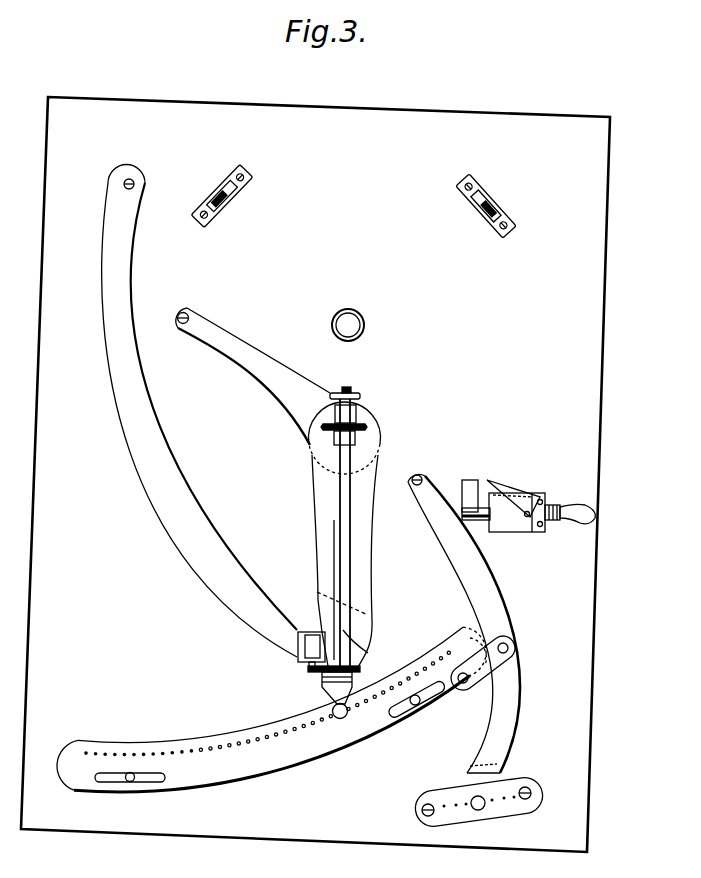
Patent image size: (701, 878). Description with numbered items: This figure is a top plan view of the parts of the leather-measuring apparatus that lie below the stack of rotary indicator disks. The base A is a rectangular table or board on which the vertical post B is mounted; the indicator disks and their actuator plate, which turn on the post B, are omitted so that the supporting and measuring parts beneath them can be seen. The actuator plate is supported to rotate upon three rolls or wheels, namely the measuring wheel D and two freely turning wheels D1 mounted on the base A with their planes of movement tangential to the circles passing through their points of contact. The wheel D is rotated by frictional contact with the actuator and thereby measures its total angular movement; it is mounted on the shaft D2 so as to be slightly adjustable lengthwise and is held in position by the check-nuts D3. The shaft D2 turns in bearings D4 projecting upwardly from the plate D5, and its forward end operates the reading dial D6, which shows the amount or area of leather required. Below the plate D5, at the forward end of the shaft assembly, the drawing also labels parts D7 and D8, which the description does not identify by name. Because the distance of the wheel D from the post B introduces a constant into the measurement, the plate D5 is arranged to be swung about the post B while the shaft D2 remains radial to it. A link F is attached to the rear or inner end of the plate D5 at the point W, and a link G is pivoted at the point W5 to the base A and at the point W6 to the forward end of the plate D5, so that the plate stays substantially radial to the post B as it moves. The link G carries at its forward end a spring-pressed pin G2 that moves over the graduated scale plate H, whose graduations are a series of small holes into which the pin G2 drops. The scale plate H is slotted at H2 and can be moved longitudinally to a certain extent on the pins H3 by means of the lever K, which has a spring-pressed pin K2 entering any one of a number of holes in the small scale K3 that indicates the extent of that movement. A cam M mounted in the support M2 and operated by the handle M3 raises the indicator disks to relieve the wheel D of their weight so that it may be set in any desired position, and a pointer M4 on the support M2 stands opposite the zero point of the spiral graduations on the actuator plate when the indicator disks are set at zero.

The base A is at (256, 830).
The vertical post B is at (362, 312).
The wheel D is at (372, 418).
The wheel D1 is at (233, 191).
The shaft D2 is at (357, 443).
The check-nuts D3 is at (357, 412).
The bearings D4 is at (360, 395).
The plate D5 is at (370, 540).
The reading dial D6 is at (300, 628).
The foot D7 is at (322, 675).
The base plate D8 is at (308, 668).
The link F is at (225, 347).
The link G is at (197, 512).
The spring-pressed pin G2 is at (345, 722).
The scale plate H is at (322, 743).
The slot H2 is at (155, 781).
The pins H3 is at (415, 707).
The lever K is at (520, 700).
The spring-pressed pin K2 is at (482, 810).
The small scale K3 is at (536, 802).
The cam M is at (472, 480).
The support M2 is at (518, 533).
The operating handle M3 is at (597, 508).
The pointer M4 is at (507, 490).
The point W is at (190, 307).
The point W5 is at (134, 179).
The point W6 is at (343, 630).